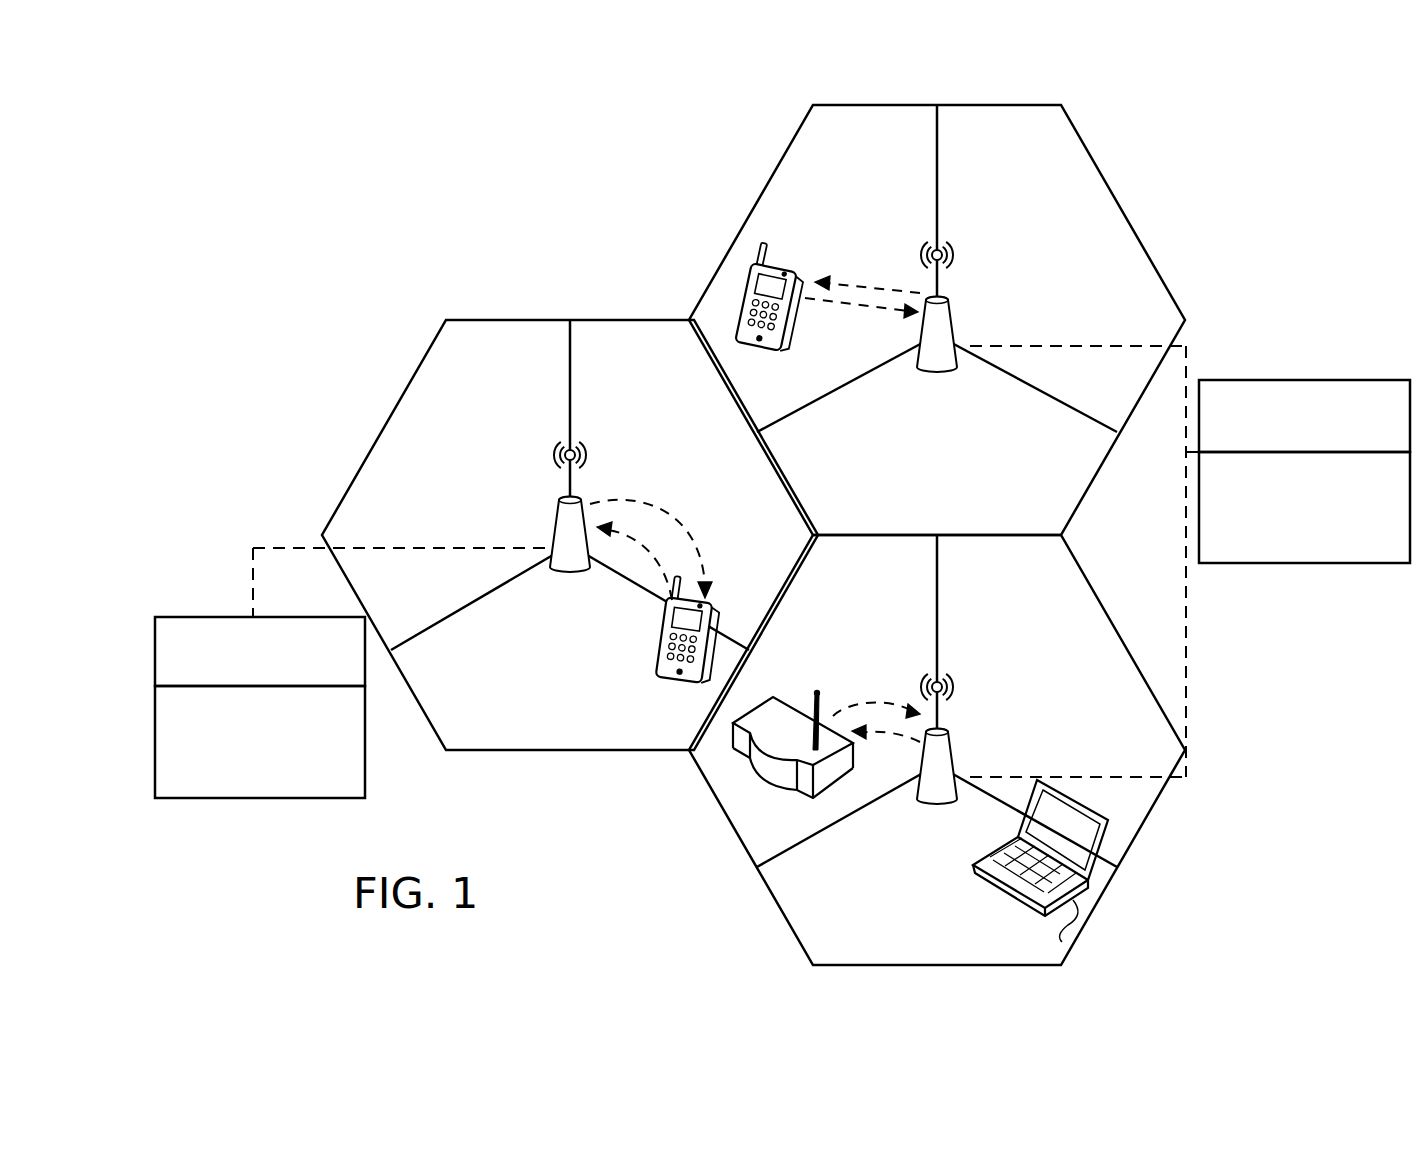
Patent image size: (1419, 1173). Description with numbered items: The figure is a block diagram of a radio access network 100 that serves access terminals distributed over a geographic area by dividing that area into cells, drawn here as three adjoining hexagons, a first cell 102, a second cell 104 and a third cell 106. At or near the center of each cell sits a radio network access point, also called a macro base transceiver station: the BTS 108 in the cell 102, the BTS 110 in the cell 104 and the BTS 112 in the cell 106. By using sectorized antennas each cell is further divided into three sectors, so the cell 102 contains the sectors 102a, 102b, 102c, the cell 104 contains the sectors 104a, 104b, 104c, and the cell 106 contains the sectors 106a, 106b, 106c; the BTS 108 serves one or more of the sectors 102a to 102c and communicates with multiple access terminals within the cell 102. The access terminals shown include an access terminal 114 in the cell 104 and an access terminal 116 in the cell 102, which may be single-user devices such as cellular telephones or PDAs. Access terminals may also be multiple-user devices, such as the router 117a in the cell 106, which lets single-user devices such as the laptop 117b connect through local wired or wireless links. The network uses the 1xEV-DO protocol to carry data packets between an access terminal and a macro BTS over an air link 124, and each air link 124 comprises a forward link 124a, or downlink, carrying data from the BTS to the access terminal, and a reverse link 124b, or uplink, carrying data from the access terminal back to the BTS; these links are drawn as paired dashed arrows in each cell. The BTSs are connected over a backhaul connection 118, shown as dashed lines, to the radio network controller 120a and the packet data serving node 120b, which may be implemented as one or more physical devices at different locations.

The radio access network 100 is at (583, 172).
The cell 102 is at (378, 398).
The sector 102a is at (484, 490).
The sector 102b is at (671, 420).
The sector 102c is at (600, 719).
The cell 104 is at (1107, 170).
The sector 104a is at (870, 170).
The sector 104b is at (1083, 275).
The sector 104c is at (985, 468).
The cell 106 is at (725, 861).
The sector 106a is at (922, 588).
The sector 106b is at (1107, 713).
The sector 106c is at (939, 929).
The macro base transceiver station 108 is at (550, 562).
The macro base transceiver station 110 is at (924, 368).
The macro base transceiver station 112 is at (927, 798).
The access terminal 114 is at (800, 347).
The access terminal 116 is at (665, 672).
The router 117a is at (763, 767).
The laptop 117b is at (1018, 898).
The backhaul connection 118 is at (252, 568).
The radio network controller 120a is at (155, 652).
The packet data serving node 120b is at (782, 625).
The air link 124 is at (875, 312).
The forward link 124a is at (853, 287).
The reverse link 124b is at (842, 300).